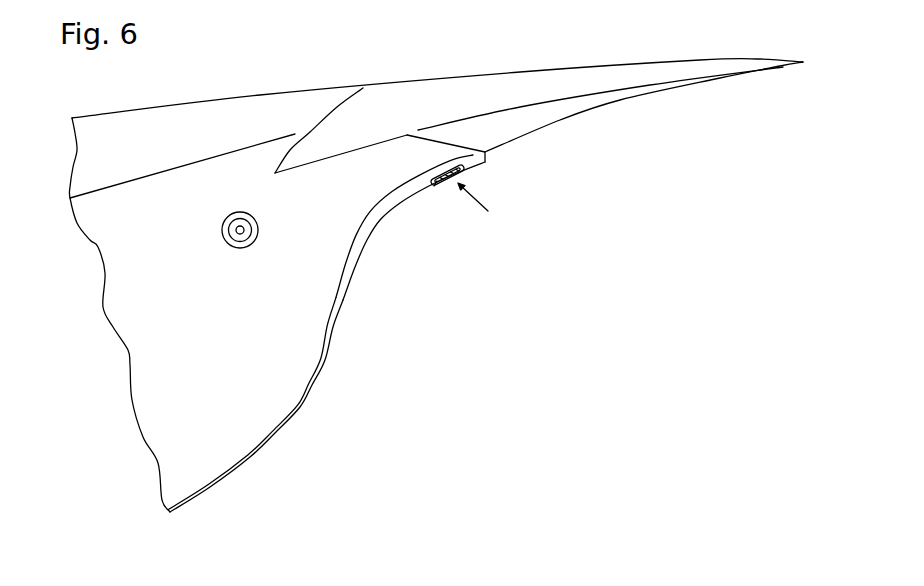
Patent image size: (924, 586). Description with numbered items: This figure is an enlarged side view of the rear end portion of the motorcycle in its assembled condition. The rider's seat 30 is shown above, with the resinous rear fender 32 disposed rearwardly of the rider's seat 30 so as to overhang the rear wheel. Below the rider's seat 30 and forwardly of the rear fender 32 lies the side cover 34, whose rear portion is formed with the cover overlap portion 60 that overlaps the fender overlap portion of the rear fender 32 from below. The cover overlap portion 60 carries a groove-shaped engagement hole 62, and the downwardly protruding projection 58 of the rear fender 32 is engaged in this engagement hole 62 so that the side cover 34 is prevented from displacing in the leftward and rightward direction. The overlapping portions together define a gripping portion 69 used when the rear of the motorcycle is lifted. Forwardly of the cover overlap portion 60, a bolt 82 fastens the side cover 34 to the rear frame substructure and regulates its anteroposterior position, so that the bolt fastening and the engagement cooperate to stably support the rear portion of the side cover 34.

The rider's seat 30 is at (207, 117).
The rear fender 32 is at (466, 82).
The side cover 34 is at (302, 353).
The projection 58 is at (465, 173).
The cover overlap portion 60 is at (403, 198).
The engagement hole 62 is at (438, 184).
The gripping portion 69 is at (488, 204).
The bolt 82 is at (240, 212).